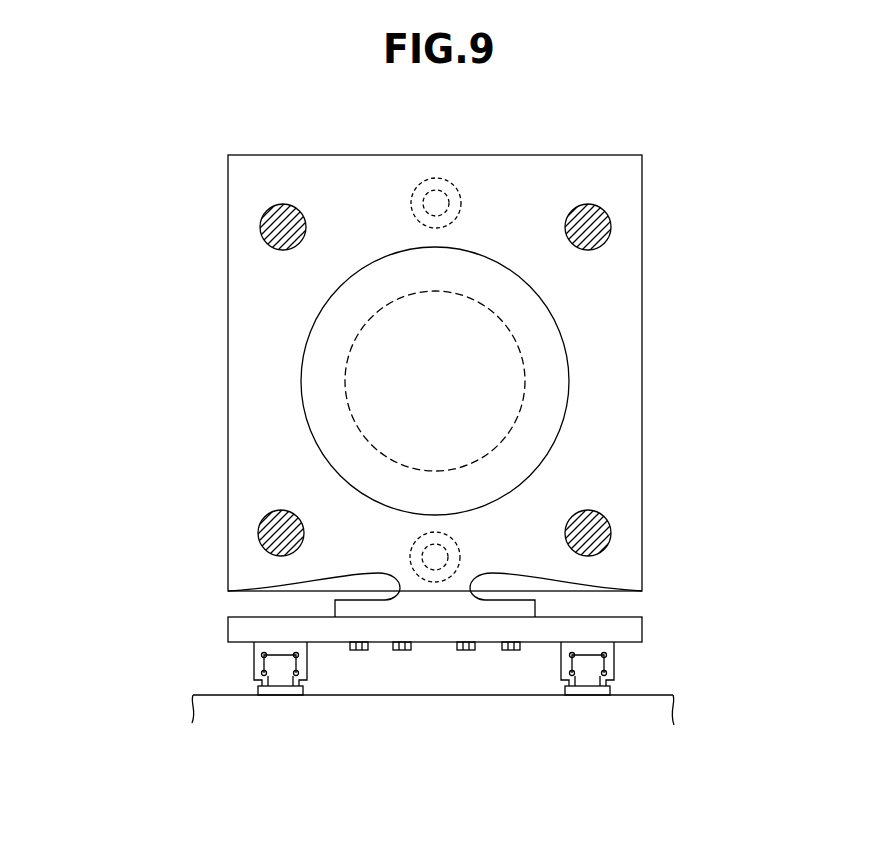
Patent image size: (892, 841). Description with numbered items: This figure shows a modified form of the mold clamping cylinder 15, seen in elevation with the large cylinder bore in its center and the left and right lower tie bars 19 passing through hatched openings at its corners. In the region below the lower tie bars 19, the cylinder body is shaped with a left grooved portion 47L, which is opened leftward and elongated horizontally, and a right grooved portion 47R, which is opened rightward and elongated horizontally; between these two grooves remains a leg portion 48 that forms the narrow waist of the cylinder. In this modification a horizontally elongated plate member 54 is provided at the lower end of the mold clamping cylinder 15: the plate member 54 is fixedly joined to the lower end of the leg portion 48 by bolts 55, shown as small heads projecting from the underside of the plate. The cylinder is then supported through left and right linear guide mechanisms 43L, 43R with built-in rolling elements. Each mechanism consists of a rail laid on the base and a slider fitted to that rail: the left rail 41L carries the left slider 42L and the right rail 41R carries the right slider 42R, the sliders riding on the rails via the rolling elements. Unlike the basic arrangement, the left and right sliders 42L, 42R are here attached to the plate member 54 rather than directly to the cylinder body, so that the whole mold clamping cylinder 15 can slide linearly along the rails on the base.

The mold clamping cylinder 15 is at (499, 180).
The lower tie bars 19 is at (262, 222).
The left rail 41L is at (253, 691).
The right rail 41R is at (614, 692).
The left slider 42L is at (255, 663).
The right slider 42R is at (612, 663).
The left linear guide mechanism 43L is at (168, 653).
The right linear guide mechanism 43R is at (699, 654).
The left grooved portion 47L is at (368, 582).
The right grooved portion 47R is at (502, 582).
The leg portion 48 is at (433, 603).
The plate member 54 is at (643, 630).
The bolts 55 is at (357, 652).